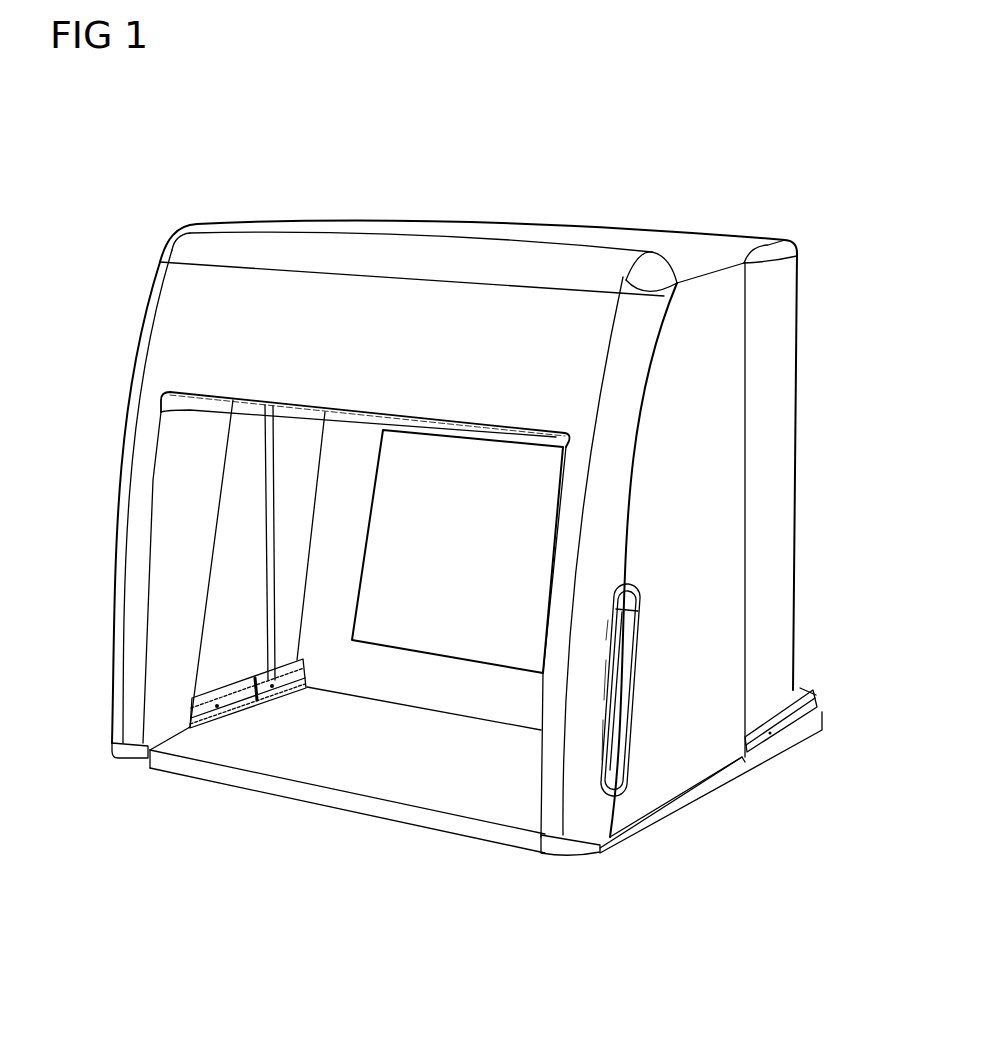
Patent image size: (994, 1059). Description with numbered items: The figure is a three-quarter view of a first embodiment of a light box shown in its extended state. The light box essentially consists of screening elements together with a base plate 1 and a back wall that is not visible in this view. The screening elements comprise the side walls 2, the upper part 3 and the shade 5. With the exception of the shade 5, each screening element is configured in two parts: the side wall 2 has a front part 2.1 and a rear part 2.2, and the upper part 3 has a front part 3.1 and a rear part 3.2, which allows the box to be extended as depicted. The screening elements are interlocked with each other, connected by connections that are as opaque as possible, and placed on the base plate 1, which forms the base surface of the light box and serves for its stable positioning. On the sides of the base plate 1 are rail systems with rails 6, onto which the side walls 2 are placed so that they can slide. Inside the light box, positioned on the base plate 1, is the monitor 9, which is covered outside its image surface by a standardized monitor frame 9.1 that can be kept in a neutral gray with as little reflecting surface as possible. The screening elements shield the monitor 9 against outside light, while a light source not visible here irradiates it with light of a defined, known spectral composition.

The base plate 1 is at (436, 794).
The side walls 2 is at (120, 361).
The front part of side wall 2.1 is at (727, 602).
The rear part of side wall 2.2 is at (773, 548).
The upper part 3 is at (276, 196).
The front part of upper part 3.1 is at (650, 238).
The rear part of upper part 3.2 is at (741, 243).
The shade 5 is at (210, 298).
The rails 6 is at (230, 703).
The monitor 9 is at (449, 556).
The monitor frame 9.1 is at (355, 576).